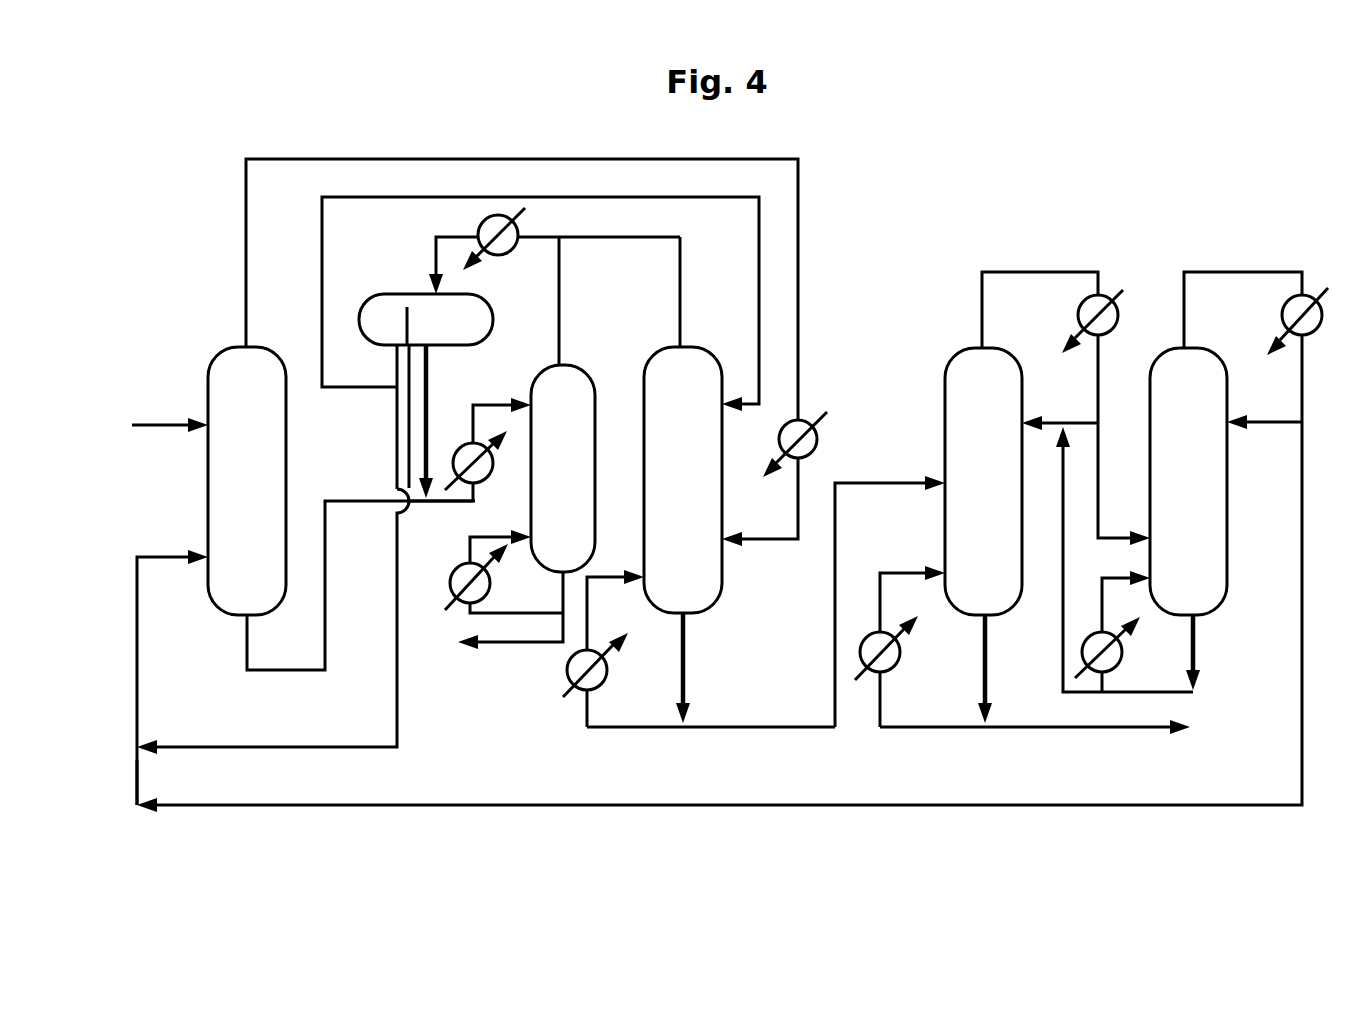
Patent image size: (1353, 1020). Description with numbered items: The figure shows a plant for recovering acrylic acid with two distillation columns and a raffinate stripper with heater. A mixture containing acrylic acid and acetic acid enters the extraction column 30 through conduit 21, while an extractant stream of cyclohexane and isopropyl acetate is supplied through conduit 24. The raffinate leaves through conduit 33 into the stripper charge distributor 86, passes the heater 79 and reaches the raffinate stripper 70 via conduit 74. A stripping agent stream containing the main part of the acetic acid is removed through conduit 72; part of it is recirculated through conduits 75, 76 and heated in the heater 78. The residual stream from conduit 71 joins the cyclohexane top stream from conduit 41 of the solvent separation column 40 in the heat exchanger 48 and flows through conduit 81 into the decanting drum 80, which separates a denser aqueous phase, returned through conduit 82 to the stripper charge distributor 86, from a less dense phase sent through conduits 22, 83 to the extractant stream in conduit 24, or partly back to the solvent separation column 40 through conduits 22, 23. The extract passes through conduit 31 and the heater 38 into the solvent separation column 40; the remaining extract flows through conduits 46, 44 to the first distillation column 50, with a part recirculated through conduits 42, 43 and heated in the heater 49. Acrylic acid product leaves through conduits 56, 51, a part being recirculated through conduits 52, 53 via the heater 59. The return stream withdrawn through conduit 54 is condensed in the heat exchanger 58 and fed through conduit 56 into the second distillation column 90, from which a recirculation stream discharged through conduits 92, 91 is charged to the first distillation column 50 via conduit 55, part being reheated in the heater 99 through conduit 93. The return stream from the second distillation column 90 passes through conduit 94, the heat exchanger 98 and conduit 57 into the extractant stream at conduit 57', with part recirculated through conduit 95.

The conduit 21 is at (159, 421).
The conduit 22 is at (393, 372).
The conduit 23 is at (320, 268).
The conduit 24 is at (140, 700).
The extraction column 30 is at (247, 481).
The conduit 31 is at (240, 273).
The conduit 33 is at (298, 668).
The heater 38 is at (814, 440).
The solvent separation column 40 is at (683, 480).
The conduit 41 is at (683, 310).
The conduit 42 is at (645, 725).
The conduit 43 is at (605, 583).
The conduit 44 is at (822, 721).
The conduit 46 is at (688, 655).
The heat exchanger 48 is at (476, 226).
The heater 49 is at (570, 667).
The first distillation column 50 is at (983, 481).
The conduit 51 is at (1065, 735).
The conduit 52 is at (917, 729).
The conduit 53 is at (880, 572).
The conduit 54 is at (978, 272).
The conduit 55 is at (1056, 420).
The conduit 56 is at (1100, 466).
The conduit 57 is at (719, 573).
The conduit 57' is at (103, 782).
The heat exchanger 58 is at (1106, 288).
The heater 59 is at (875, 645).
The raffinate stripper 70 is at (563, 468).
The conduit 71 is at (562, 300).
The conduit 72 is at (487, 650).
The conduit 74 is at (510, 401).
The conduit 75 is at (535, 611).
The conduit 76 is at (491, 536).
The heater 78 is at (449, 583).
The heater 79 is at (481, 470).
The decanting drum 80 is at (426, 319).
The conduit 81 is at (427, 244).
The conduit 82 is at (430, 365).
The conduit 83 is at (399, 680).
The stripper charge distributor 86 is at (443, 508).
The second distillation column 90 is at (1188, 481).
The conduit 91 is at (1058, 676).
The conduit 92 is at (1200, 652).
The conduit 93 is at (1097, 582).
The conduit 94 is at (1182, 333).
The conduit 95 is at (1265, 420).
The heat exchanger 98 is at (1282, 313).
The heater 99 is at (1095, 640).